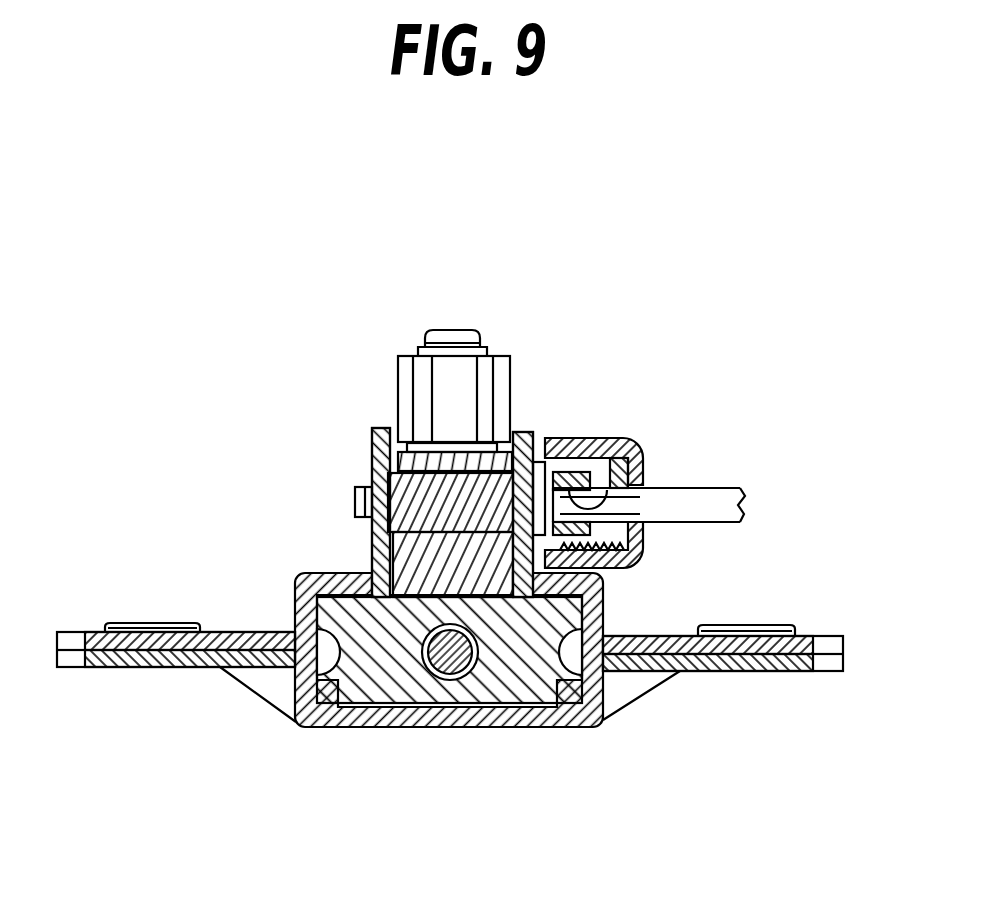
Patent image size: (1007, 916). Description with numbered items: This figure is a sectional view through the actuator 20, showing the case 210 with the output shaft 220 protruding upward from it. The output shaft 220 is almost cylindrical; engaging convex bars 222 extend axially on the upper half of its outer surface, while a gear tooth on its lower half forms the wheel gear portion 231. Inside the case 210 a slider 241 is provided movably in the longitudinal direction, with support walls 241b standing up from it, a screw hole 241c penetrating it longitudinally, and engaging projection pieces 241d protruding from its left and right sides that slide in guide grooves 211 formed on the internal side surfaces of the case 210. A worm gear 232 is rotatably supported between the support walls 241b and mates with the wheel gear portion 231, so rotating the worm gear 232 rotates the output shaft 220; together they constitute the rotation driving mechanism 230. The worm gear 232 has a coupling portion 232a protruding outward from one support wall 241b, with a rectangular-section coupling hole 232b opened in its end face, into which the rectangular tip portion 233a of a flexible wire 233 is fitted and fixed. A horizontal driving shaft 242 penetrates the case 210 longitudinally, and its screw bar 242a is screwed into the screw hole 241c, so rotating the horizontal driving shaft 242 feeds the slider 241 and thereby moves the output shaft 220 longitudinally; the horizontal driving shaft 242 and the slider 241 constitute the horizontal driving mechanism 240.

The actuator 20 is at (265, 355).
The case 210 is at (415, 727).
The guide groove 211 is at (297, 723).
The output shaft 220 is at (416, 328).
The engaging convex bar 222 is at (403, 384).
The rotation driving mechanism 230 is at (589, 416).
The wheel gear portion 231 is at (447, 463).
The worm gear 232 is at (589, 452).
The coupling portion 232a is at (638, 520).
The coupling hole 232b is at (633, 450).
The flexible wire 233 is at (708, 467).
The tip portion 233a is at (640, 513).
The horizontal driving mechanism 240 is at (450, 638).
The slider 241 is at (450, 636).
The support wall 241b is at (372, 450).
The screw hole 241c is at (433, 667).
The engaging projection piece 241d is at (296, 680).
The horizontal driving shaft 242 is at (462, 740).
The screw bar 242a is at (457, 680).